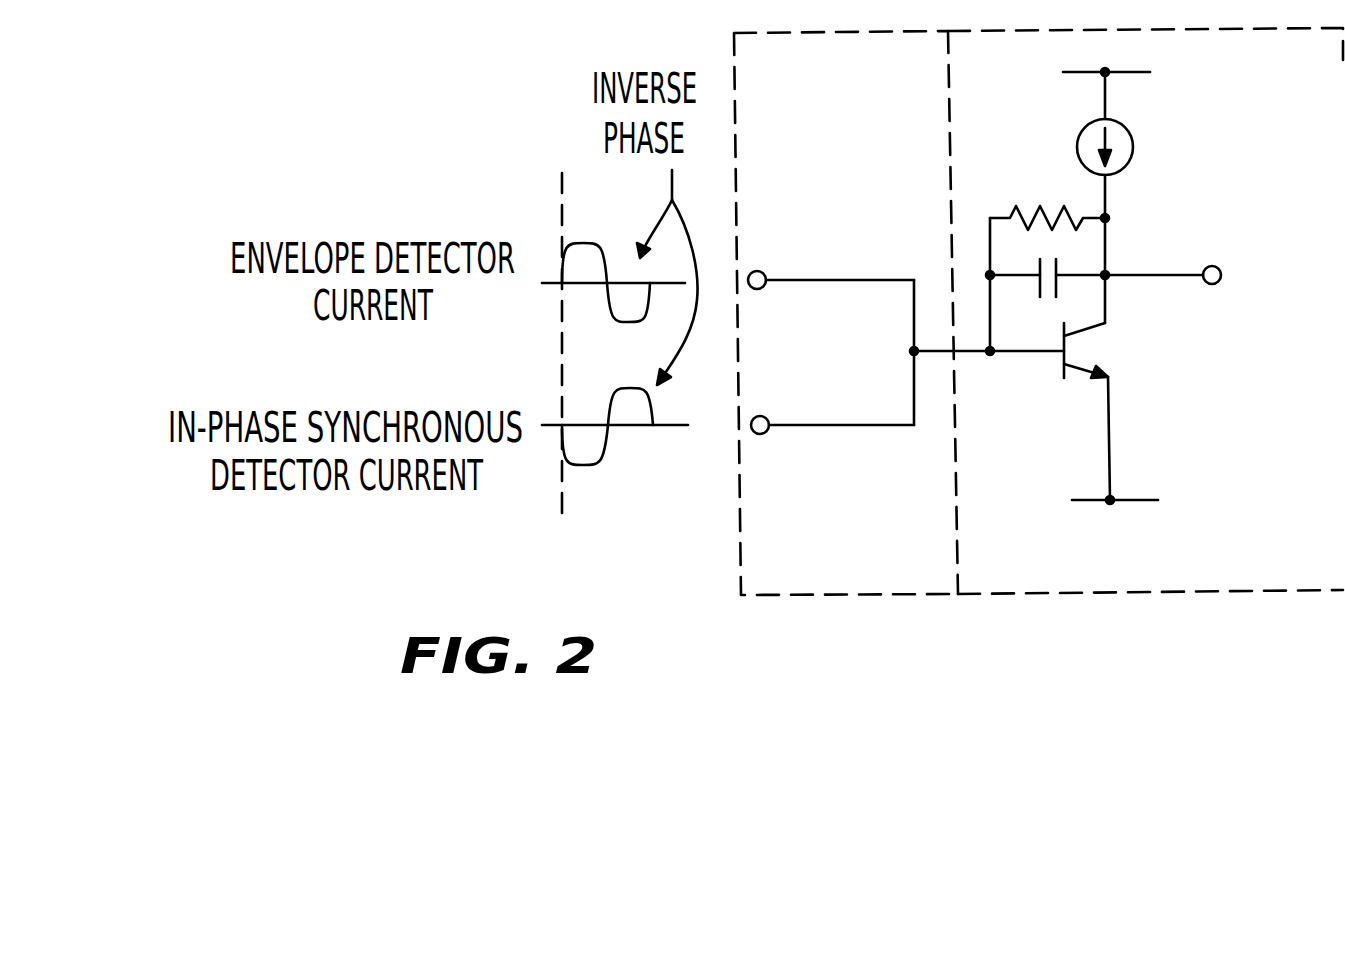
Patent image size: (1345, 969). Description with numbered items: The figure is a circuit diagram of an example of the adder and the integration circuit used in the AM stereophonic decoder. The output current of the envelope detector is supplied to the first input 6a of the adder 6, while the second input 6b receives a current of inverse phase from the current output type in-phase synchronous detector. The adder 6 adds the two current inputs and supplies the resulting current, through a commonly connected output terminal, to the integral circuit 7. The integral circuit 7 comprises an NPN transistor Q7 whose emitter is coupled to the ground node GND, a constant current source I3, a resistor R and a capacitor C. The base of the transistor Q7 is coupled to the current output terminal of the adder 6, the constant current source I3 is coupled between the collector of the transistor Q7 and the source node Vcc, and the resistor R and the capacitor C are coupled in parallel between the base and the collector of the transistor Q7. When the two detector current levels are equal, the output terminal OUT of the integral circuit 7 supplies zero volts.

The adder 6 is at (858, 596).
The first input 6a is at (765, 272).
The second input 6b is at (766, 416).
The integral circuit 7 is at (1145, 405).
The constant current source I3 is at (1129, 148).
The resistor R is at (1047, 193).
The capacitor C is at (1047, 293).
The NPN transistor Q7 is at (1108, 352).